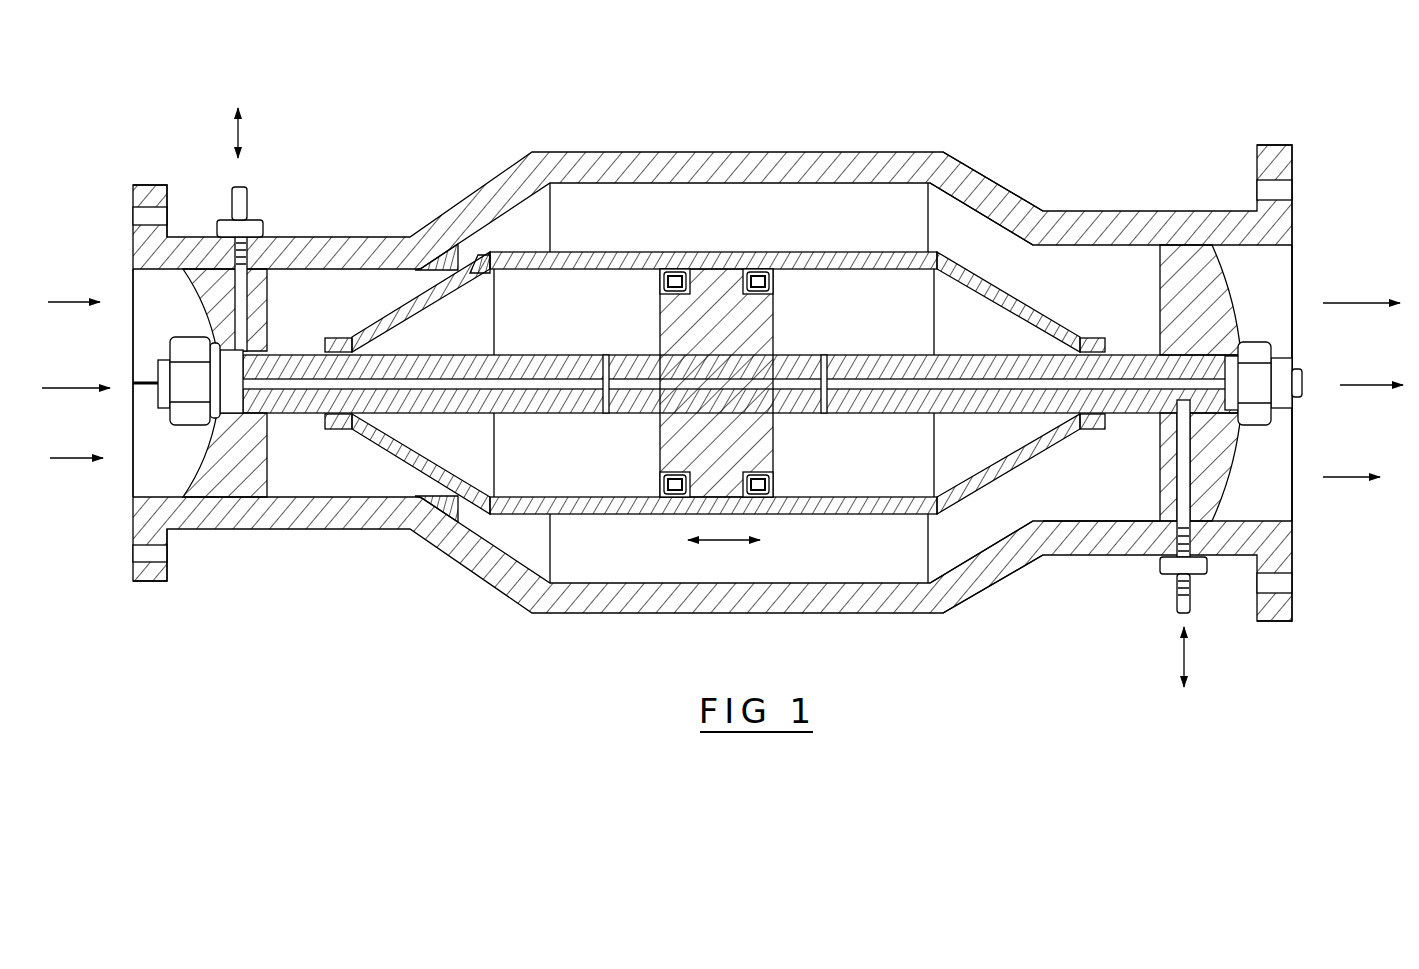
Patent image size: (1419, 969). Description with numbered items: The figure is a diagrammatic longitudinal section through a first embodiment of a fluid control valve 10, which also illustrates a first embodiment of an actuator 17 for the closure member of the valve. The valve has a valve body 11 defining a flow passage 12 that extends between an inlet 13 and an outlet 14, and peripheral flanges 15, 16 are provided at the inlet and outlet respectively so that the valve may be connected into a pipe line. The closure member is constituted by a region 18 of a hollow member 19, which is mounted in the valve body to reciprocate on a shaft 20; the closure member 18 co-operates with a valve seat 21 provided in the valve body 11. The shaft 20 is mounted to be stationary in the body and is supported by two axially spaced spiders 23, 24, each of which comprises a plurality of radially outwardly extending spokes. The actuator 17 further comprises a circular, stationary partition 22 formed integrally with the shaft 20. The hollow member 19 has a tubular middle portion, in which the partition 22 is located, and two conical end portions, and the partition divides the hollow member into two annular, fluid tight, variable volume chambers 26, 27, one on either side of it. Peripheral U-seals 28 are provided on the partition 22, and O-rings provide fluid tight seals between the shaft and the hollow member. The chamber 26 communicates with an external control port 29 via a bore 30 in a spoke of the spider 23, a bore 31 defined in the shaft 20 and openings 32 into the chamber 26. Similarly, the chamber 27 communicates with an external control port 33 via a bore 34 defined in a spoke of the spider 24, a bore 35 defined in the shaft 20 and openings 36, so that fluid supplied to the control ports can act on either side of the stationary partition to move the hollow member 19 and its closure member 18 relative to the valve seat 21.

The fluid control valve 10 is at (722, 357).
The valve body 11 is at (1003, 200).
The flow passage 12 is at (748, 208).
The inlet 13 is at (150, 323).
The outlet 14 is at (1267, 290).
The peripheral flange 15 is at (135, 232).
The peripheral flange 16 is at (1282, 174).
The actuator 17 is at (870, 215).
The closure member 18 is at (482, 268).
The hollow member 19 is at (655, 250).
The shaft 20 is at (523, 413).
The valve seat 21 is at (425, 518).
The partition 22 is at (773, 455).
The spider 23 is at (268, 462).
The spider 24 is at (1107, 528).
The chamber 26 is at (567, 331).
The chamber 27 is at (860, 318).
The U-seals 28 is at (780, 497).
The external control port 29 is at (249, 204).
The bore 30 is at (243, 303).
The bore 31 is at (306, 355).
The openings 32 is at (607, 413).
The external control port 33 is at (1177, 590).
The bore 34 is at (1185, 480).
The bore 35 is at (1122, 380).
The openings 36 is at (825, 412).